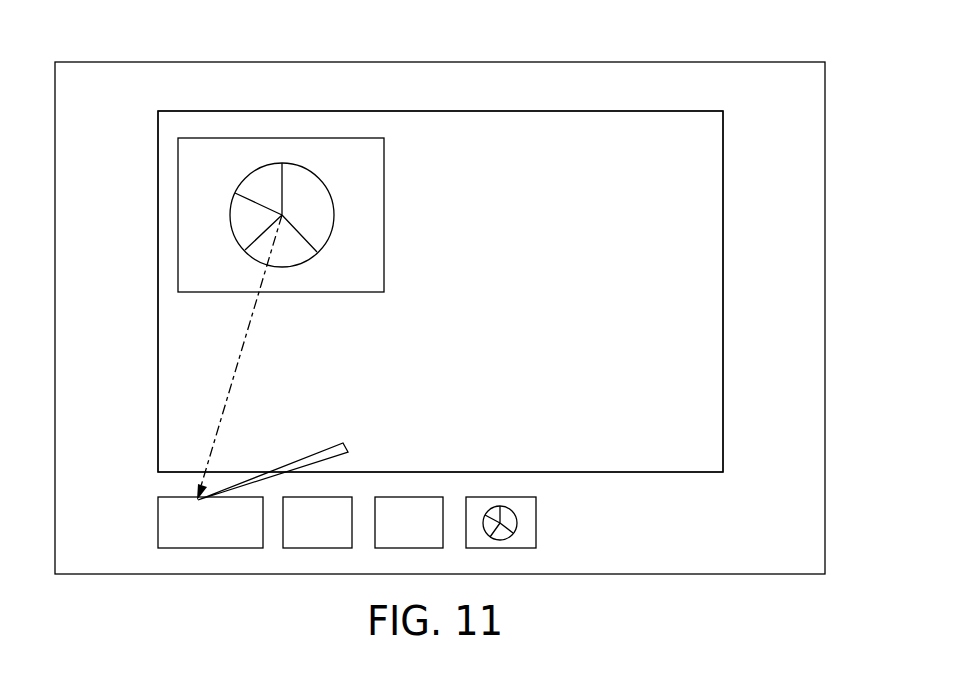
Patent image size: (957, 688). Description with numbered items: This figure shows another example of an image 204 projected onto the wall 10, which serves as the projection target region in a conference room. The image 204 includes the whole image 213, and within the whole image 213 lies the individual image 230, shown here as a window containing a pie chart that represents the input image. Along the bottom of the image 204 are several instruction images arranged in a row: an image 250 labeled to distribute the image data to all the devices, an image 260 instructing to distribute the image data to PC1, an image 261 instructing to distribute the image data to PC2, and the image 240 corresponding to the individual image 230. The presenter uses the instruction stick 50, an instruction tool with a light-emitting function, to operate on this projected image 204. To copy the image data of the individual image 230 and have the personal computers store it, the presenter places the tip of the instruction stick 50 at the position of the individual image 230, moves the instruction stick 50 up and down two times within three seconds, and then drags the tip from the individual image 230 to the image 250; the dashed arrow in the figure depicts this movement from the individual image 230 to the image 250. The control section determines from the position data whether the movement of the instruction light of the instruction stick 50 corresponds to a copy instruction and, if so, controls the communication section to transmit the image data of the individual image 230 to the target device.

The wall 10 is at (777, 62).
The image 204 is at (743, 106).
The whole image 213 is at (655, 111).
The individual image 230 is at (335, 138).
The instruction stick 50 is at (348, 447).
The image instructing to distribute the image data to all the devices 250 is at (171, 496).
The image instructing to distribute the image data to PC1 260 is at (317, 496).
The image instructing to distribute the image data to PC2 261 is at (410, 496).
The image corresponding to the individual image 240 is at (500, 496).